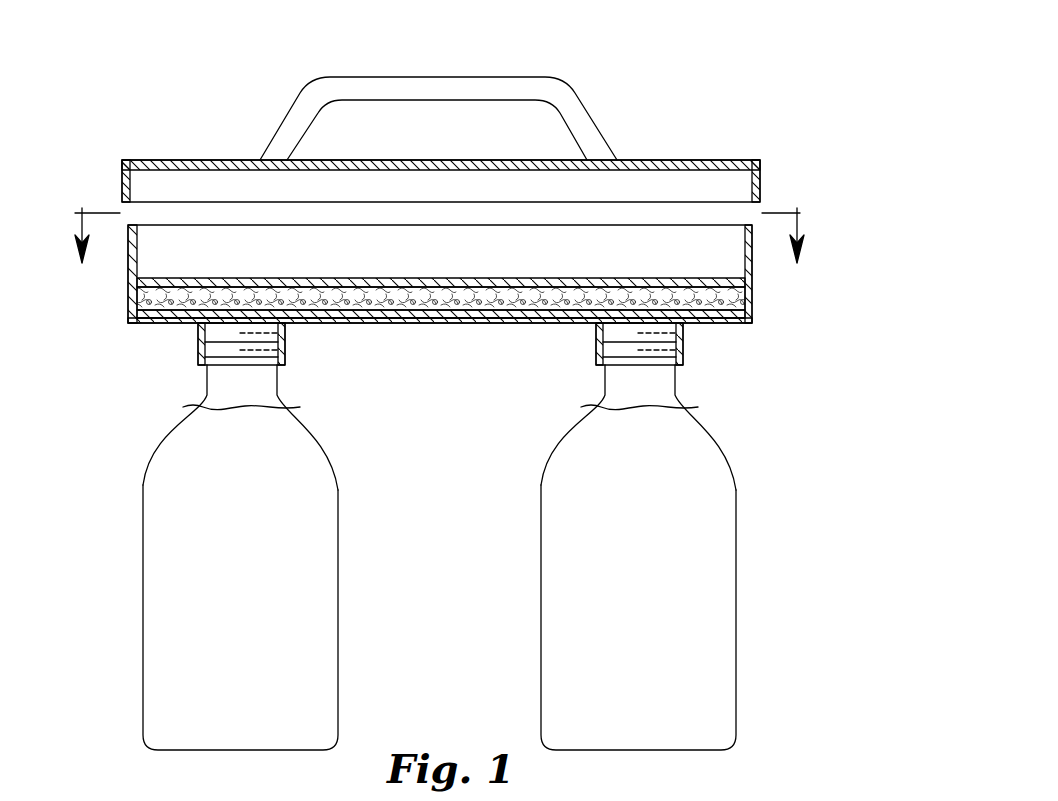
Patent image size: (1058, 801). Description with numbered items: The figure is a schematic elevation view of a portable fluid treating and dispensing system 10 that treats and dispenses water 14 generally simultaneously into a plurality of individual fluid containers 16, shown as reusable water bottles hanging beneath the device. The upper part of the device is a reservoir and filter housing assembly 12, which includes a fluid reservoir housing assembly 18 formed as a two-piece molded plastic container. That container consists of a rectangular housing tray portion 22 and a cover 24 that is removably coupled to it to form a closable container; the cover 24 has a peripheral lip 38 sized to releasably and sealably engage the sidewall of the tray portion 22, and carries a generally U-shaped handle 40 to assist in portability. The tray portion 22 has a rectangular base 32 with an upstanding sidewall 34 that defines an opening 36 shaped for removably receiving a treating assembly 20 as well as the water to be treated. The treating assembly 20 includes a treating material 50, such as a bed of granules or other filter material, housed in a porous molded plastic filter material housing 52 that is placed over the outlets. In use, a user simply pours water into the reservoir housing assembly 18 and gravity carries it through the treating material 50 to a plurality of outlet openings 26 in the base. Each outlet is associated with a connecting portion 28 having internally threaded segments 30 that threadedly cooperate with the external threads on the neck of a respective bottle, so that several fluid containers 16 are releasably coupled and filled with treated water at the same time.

The fluid treating and dispensing system 10 is at (431, 380).
The reservoir and filter housing assembly 12 is at (416, 112).
The water 14 is at (215, 408).
The fluid containers 16 is at (328, 572).
The fluid reservoir housing assembly 18 is at (465, 244).
The treating assembly 20 is at (434, 244).
The tray portion 22 is at (162, 319).
The cover 24 is at (185, 164).
The outlet openings 26 is at (243, 317).
The connecting portions 28 is at (283, 350).
The internally threaded segments 30 is at (256, 353).
The base 32 is at (522, 319).
The sidewall 34 is at (133, 256).
The opening 36 is at (677, 224).
The peripheral lip 38 is at (123, 173).
The handle 40 is at (463, 87).
The treating material 50 is at (470, 299).
The filter material housing 52 is at (395, 312).